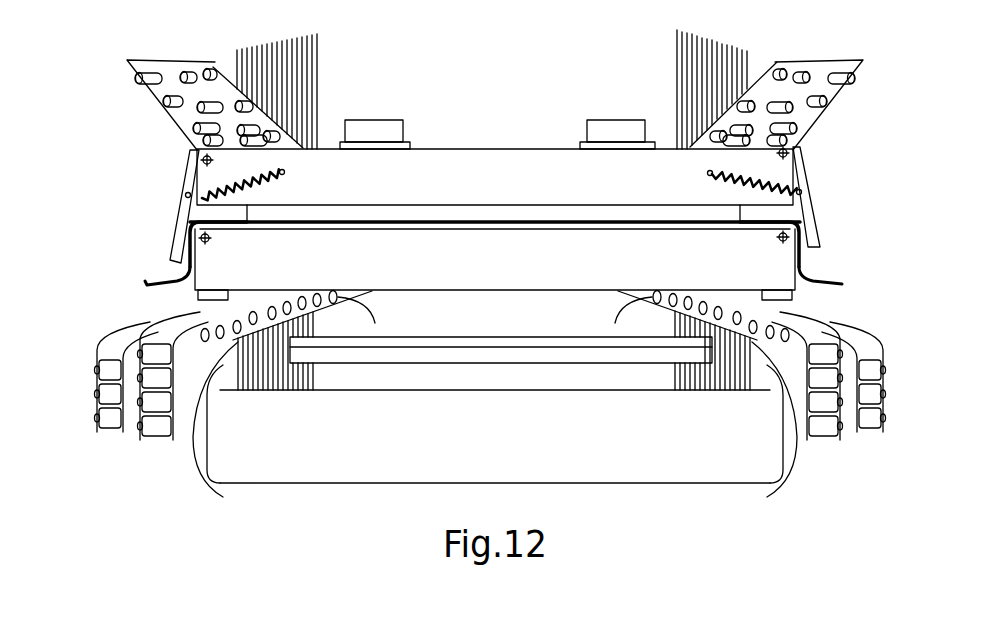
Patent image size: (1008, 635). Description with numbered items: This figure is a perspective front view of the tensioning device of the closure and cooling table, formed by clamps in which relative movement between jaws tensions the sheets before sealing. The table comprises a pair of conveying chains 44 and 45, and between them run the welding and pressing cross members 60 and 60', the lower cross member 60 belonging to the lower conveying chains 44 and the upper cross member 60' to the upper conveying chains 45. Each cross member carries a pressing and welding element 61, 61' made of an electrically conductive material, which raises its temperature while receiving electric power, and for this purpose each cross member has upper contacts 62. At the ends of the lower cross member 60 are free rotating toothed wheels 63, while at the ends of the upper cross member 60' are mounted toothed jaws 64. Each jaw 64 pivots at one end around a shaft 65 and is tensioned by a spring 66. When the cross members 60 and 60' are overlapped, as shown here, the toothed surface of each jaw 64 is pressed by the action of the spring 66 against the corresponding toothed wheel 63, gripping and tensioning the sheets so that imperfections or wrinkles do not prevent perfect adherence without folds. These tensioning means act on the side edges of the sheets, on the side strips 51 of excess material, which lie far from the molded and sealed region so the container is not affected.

The conveying chain 44 is at (100, 377).
The conveying chain 45 is at (188, 77).
The side strip 51 is at (152, 283).
The welding and pressing cross member 60 is at (495, 280).
The welding and pressing cross member 60' is at (495, 148).
The pressing and welding element 61 is at (495, 280).
The pressing and welding element 61' is at (495, 157).
The upper contact 62 is at (373, 123).
The free rotating toothed wheel 63 is at (190, 240).
The toothed jaw 64 is at (180, 212).
The shaft 65 is at (195, 163).
The spring 66 is at (240, 180).